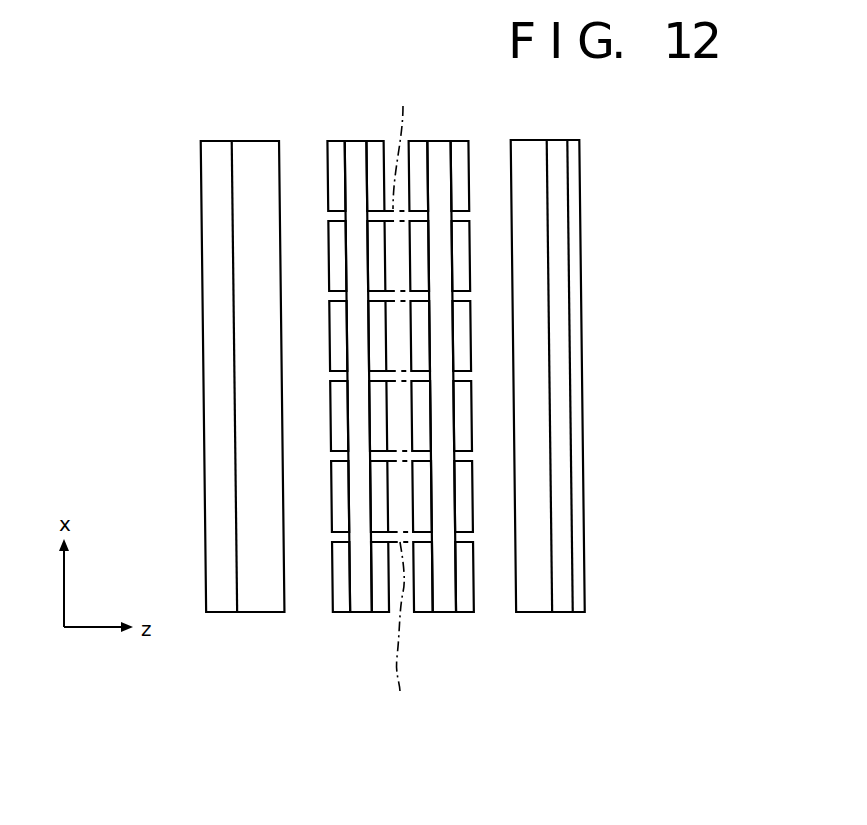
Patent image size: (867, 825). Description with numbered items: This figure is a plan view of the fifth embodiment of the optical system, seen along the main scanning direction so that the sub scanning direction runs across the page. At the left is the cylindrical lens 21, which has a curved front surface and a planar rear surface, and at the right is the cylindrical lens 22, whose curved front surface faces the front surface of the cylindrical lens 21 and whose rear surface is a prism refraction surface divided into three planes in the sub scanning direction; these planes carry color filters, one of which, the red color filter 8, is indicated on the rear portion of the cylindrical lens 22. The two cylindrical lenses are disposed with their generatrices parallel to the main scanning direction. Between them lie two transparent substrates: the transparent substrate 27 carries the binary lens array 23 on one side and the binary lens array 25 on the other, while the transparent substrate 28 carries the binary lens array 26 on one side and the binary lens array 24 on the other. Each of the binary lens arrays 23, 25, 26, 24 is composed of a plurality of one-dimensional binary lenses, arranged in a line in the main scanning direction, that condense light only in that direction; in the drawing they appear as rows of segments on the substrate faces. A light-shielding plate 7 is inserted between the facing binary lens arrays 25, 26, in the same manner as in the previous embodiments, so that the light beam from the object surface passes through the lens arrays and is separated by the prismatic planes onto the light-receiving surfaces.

The light-shielding plate 7 is at (402, 399).
The color filter 8 is at (573, 216).
The cylindrical lens 21 is at (253, 158).
The cylindrical lens 22 is at (531, 158).
The binary lens array 23 is at (337, 624).
The binary lens array 24 is at (468, 624).
The binary lens array 25 is at (380, 624).
The binary lens array 26 is at (423, 624).
The transparent substrate 27 is at (353, 158).
The transparent substrate 28 is at (442, 160).